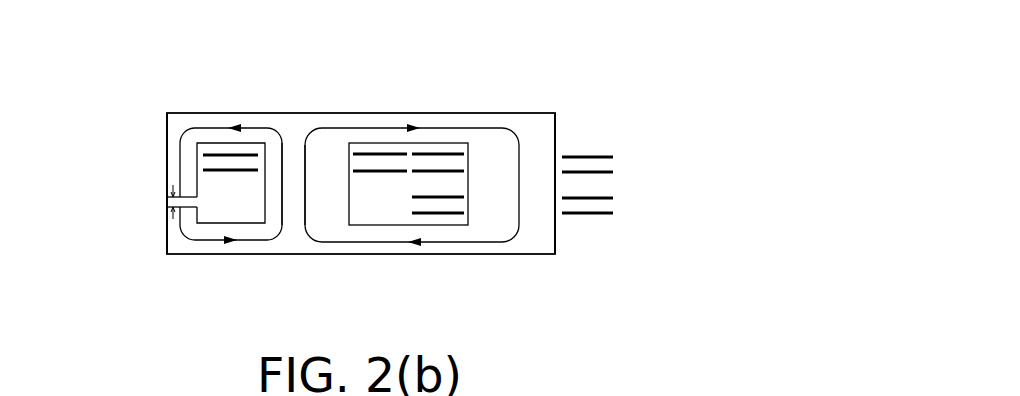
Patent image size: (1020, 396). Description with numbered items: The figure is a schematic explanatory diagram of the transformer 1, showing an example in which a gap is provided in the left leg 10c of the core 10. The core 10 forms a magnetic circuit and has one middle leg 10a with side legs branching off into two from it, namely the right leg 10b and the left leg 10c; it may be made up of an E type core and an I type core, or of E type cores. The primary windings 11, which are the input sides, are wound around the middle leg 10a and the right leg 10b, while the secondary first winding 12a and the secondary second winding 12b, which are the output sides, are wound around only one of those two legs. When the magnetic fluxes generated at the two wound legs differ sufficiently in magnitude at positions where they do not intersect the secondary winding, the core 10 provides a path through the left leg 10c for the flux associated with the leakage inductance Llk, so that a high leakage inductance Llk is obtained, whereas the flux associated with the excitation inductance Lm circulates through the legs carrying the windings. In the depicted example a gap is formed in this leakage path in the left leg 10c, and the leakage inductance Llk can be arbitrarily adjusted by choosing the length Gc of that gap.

The transformer 1 is at (54, 49).
The core 10 is at (257, 95).
The middle leg 10a is at (295, 128).
The right leg 10b is at (534, 128).
The left leg 10c is at (178, 125).
The primary windings 11 is at (213, 150).
The secondary first winding 12a is at (607, 197).
The secondary second winding 12b is at (593, 215).
The gap length Gc is at (165, 205).
The leakage inductance Llk is at (212, 241).
The excitation inductance Lm is at (482, 243).